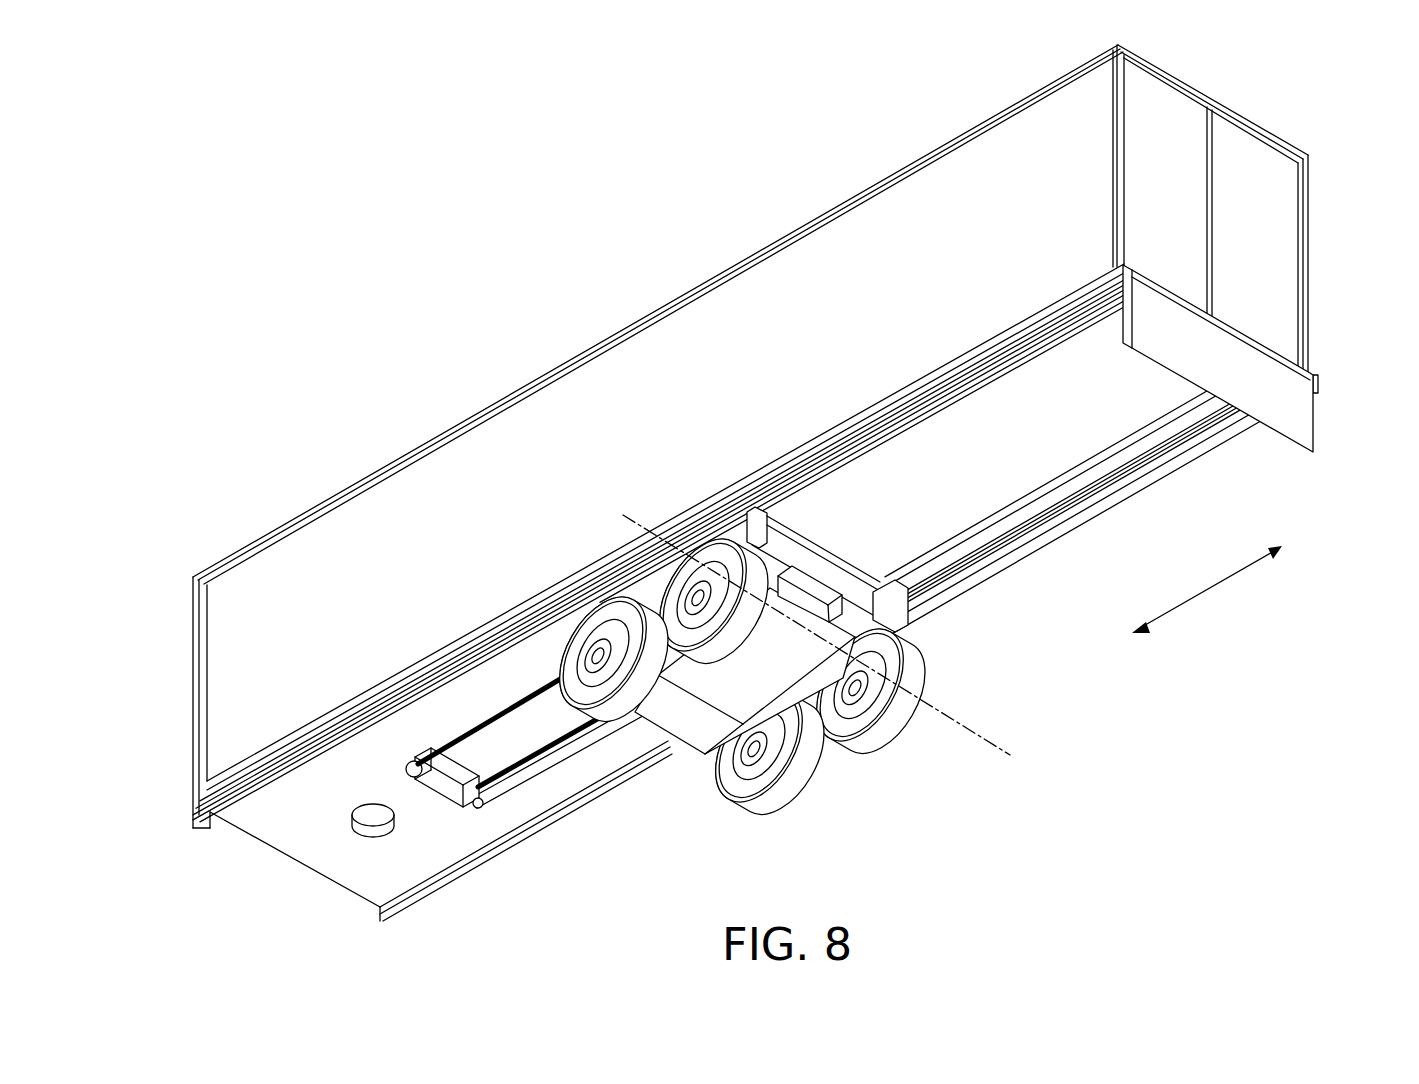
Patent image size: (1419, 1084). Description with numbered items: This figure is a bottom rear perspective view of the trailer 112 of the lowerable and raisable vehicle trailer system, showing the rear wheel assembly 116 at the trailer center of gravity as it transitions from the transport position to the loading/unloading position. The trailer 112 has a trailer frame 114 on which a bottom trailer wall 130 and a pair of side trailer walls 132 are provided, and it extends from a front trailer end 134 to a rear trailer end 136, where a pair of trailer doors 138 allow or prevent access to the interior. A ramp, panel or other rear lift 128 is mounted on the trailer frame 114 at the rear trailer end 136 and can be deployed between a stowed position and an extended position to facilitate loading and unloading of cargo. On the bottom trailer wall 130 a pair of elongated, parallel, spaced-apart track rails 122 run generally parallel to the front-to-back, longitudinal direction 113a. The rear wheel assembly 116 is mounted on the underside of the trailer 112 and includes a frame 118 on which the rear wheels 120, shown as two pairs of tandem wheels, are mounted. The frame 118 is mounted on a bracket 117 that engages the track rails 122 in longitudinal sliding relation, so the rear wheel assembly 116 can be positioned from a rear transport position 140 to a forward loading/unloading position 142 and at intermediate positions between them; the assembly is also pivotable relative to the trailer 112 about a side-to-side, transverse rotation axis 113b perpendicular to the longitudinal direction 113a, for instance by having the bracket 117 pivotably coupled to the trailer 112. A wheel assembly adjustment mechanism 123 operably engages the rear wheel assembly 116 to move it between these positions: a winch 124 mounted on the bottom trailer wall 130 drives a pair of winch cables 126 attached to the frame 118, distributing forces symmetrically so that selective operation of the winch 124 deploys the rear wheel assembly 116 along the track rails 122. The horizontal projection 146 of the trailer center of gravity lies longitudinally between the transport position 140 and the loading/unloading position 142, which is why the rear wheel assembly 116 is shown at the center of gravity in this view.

The trailer 112 is at (1333, 290).
The longitudinal direction 113a is at (1238, 592).
The transverse rotation axis 113b is at (958, 702).
The trailer frame 114 is at (552, 826).
The rear wheel assembly 116 is at (860, 558).
The bracket 117 is at (800, 557).
The frame 118 is at (682, 720).
The rear wheels 120 is at (811, 715).
The track rails 122 is at (952, 417).
The wheel assembly adjustment mechanism 123 is at (378, 766).
The winch 124 is at (440, 806).
The winch cables 126 is at (468, 718).
The rear lift 128 is at (1300, 405).
The bottom trailer wall 130 is at (470, 845).
The side trailer walls 132 is at (535, 414).
The front trailer end 134 is at (196, 605).
The rear trailer end 136 is at (1310, 223).
The trailer doors 138 is at (1168, 100).
The transport position 140 is at (1110, 380).
The loading/unloading position 142 is at (445, 700).
The horizontal projection 146 is at (672, 552).